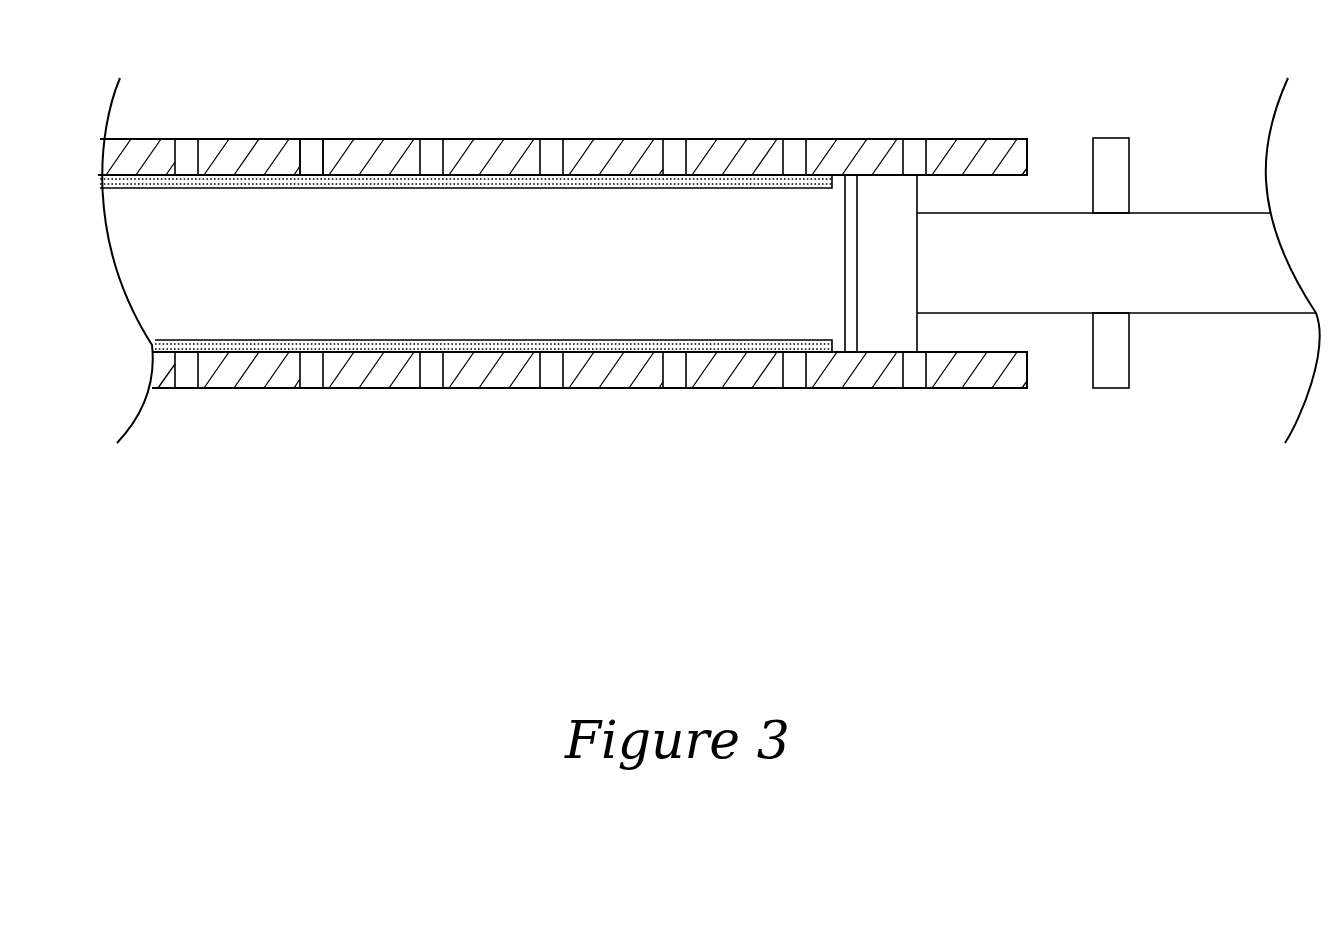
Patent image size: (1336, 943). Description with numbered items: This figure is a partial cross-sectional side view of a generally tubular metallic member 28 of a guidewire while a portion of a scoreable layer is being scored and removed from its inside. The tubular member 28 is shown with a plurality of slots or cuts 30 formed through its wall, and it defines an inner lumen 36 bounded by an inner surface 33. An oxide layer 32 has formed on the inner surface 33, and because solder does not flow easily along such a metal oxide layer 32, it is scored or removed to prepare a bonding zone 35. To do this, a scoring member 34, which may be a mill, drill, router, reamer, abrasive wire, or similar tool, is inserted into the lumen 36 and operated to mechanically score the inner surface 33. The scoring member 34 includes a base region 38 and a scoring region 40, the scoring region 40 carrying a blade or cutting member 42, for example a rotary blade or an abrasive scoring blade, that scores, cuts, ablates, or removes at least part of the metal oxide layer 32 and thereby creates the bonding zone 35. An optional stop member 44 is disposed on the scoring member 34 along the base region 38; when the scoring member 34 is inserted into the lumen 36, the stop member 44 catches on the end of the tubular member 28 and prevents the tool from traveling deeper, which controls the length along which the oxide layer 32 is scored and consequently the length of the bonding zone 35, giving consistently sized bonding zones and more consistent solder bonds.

The tubular member 28 is at (511, 153).
The slots or cuts 30 is at (312, 153).
The metal oxide layer 32 is at (633, 179).
The inner surface 33 is at (722, 185).
The scoring member 34 is at (1196, 314).
The bonding zone 35 is at (1012, 180).
The inner lumen 36 is at (382, 290).
The base region 38 is at (1040, 290).
The scoring region 40 is at (882, 200).
The cutting member 42 is at (845, 263).
The stop member 44 is at (1110, 150).